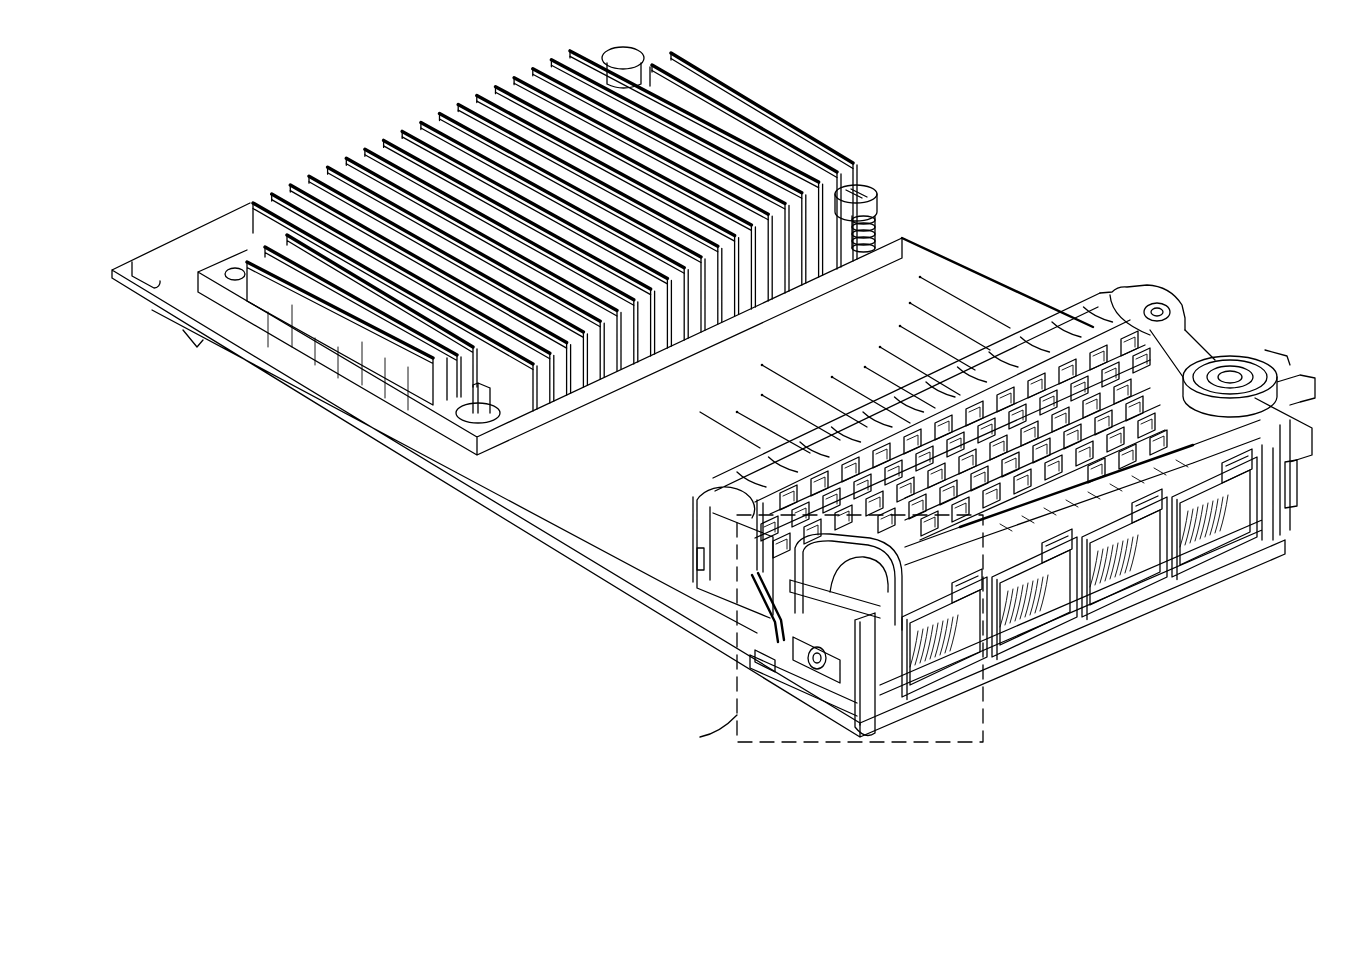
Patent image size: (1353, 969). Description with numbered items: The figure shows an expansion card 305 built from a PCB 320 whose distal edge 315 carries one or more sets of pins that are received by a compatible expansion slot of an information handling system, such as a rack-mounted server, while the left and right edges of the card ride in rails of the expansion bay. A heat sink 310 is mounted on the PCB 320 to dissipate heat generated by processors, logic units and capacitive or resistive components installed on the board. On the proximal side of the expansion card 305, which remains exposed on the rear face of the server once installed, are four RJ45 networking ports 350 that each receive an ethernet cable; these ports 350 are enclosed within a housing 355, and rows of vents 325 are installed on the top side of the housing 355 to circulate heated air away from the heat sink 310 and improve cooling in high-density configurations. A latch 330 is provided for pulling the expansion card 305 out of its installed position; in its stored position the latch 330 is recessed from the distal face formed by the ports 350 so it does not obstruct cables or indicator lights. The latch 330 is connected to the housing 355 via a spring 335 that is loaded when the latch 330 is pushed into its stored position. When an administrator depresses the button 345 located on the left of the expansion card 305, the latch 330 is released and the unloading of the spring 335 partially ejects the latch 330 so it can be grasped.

The expansion card 305 is at (150, 106).
The heat sink 310 is at (422, 145).
The distal edge 315 is at (172, 246).
The PCB 320 is at (590, 516).
The rows of vents 325 is at (1092, 402).
The latch 330 is at (1078, 583).
The spring 335 is at (788, 590).
The button 345 is at (866, 730).
The ports 350 is at (1232, 508).
The housing 355 is at (1234, 368).